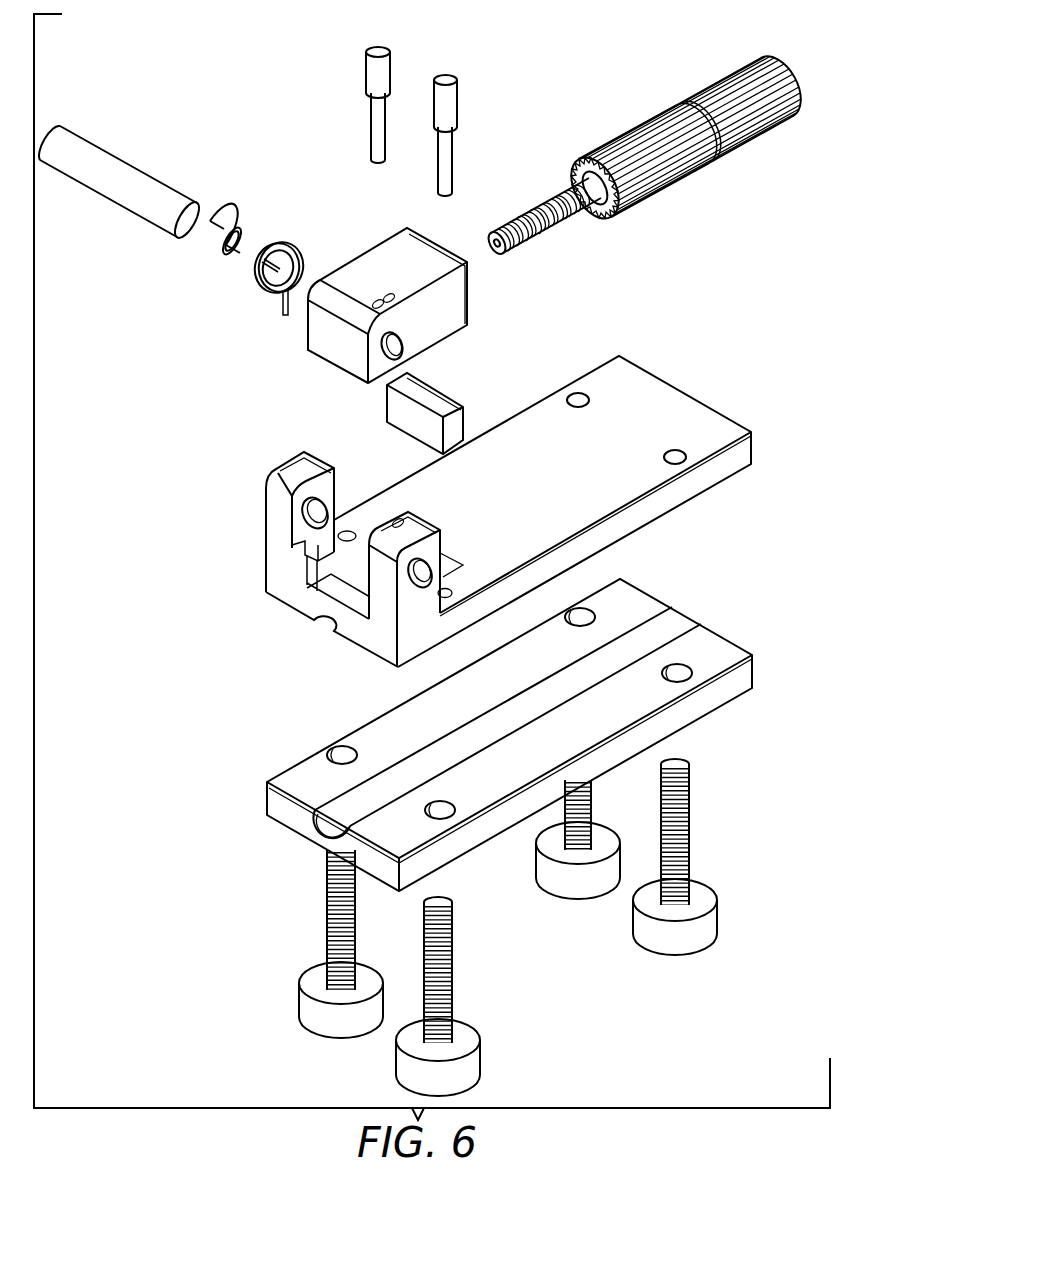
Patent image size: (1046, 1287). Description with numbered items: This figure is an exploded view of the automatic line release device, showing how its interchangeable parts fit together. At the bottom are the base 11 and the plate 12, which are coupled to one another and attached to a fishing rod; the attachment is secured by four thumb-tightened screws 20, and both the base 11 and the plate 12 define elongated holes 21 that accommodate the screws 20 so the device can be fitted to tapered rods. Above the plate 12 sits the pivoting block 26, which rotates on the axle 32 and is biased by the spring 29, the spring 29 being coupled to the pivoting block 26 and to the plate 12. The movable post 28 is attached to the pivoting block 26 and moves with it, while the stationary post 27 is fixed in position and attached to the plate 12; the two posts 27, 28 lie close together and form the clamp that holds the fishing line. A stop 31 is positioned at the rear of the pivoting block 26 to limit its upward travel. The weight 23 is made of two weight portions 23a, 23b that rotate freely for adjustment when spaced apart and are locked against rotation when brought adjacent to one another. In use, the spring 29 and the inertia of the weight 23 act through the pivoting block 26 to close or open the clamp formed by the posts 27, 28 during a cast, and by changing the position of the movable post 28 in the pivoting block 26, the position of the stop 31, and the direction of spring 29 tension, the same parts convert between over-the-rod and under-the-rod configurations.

The base 11 is at (714, 631).
The plate 12 is at (698, 400).
The thumb-tightened screws 20 is at (356, 928).
The elongated holes 21 is at (674, 672).
The weight 23 is at (657, 149).
The weight portion 23a is at (744, 144).
The weight portion 23b is at (651, 194).
The pivoting block 26 is at (382, 253).
The stationary post 27 is at (379, 49).
The movable post 28 is at (446, 80).
The spring 29 is at (268, 291).
The stop 31 is at (395, 400).
The axle 32 is at (157, 210).